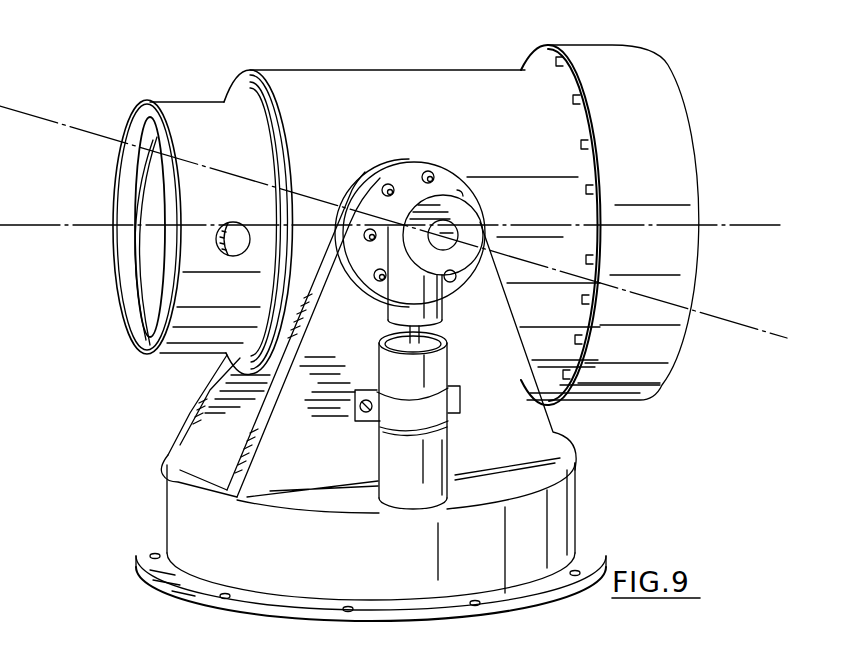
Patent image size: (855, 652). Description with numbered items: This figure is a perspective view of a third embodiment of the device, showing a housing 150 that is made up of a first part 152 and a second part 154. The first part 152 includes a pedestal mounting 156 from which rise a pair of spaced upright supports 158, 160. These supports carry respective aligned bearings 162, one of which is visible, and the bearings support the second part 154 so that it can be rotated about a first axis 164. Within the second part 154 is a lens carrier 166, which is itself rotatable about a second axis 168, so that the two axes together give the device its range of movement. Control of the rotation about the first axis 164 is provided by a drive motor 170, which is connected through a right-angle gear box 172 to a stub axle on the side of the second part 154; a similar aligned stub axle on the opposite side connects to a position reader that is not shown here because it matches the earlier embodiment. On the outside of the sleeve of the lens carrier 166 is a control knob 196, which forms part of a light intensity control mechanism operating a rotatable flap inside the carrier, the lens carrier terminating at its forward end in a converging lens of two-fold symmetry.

The housing 150 is at (640, 434).
The first part 152 is at (596, 495).
The second part 154 is at (675, 57).
The pedestal mounting 156 is at (165, 502).
The upright support 158 is at (203, 403).
The upright support 160 is at (258, 448).
The bearing 162 is at (407, 183).
The first axis 164 is at (760, 326).
The lens carrier 166 is at (187, 112).
The second axis 168 is at (747, 222).
The drive motor 170 is at (397, 478).
The right-angle gear box 172 is at (410, 289).
The control knob 196 is at (216, 250).